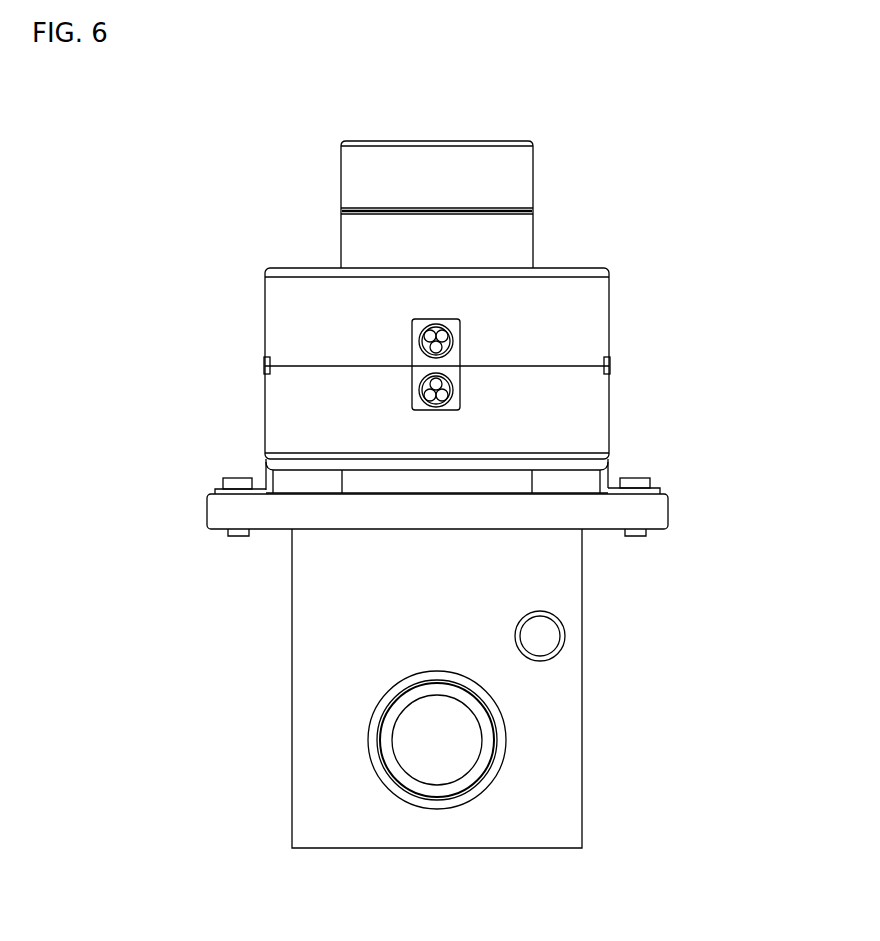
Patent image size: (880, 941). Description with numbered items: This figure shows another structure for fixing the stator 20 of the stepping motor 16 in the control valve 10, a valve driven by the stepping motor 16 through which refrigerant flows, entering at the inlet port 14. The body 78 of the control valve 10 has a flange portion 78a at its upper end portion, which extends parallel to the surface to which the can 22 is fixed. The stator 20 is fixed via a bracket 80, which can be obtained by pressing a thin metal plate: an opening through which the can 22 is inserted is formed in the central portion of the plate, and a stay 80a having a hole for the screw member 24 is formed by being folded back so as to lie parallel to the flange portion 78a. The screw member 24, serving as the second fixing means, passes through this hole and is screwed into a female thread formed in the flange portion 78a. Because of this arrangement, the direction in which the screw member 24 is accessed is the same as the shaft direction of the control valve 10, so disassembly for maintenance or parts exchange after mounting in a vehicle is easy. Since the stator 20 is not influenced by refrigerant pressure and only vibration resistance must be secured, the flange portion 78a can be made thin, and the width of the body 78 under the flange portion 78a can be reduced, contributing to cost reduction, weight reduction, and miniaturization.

The control valve 10 is at (274, 179).
The inlet port 14 is at (426, 786).
The stepping motor 16 is at (578, 246).
The stator 20 is at (591, 308).
The can 22 is at (492, 158).
The screw member 24 is at (240, 480).
The body 78 is at (560, 757).
The flange portion 78a is at (651, 511).
The bracket 80 is at (607, 471).
The stay 80a is at (215, 490).